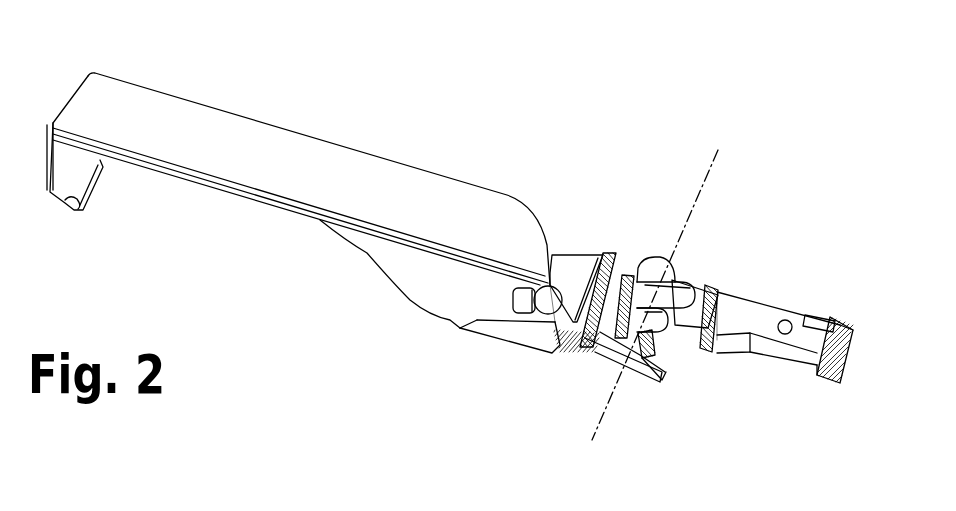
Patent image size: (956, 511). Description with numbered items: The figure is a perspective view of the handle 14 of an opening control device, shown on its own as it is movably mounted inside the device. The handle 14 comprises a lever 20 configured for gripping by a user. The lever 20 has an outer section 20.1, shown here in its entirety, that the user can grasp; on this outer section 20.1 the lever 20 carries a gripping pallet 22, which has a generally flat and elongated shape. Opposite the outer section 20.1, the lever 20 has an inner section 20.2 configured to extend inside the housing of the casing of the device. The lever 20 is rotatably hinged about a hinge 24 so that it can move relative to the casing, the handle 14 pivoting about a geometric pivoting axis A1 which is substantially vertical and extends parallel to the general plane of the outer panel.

The handle 14 is at (605, 160).
The lever 20 is at (717, 330).
The outer section 20.1 is at (407, 203).
The inner section 20.2 is at (733, 313).
The gripping pallet 22 is at (263, 143).
The hinge 24 is at (640, 330).
The pivoting axis A1 is at (720, 160).